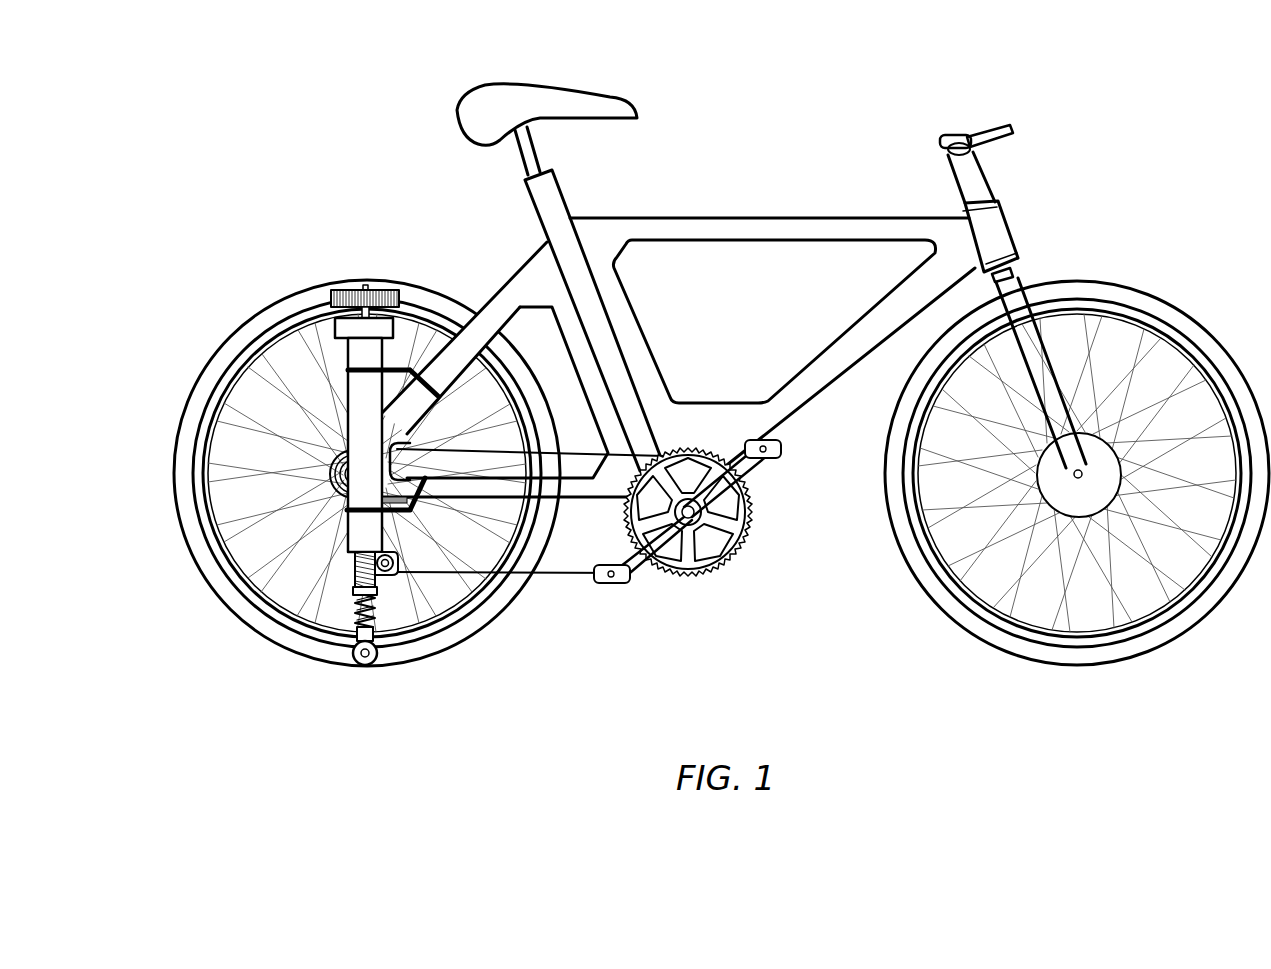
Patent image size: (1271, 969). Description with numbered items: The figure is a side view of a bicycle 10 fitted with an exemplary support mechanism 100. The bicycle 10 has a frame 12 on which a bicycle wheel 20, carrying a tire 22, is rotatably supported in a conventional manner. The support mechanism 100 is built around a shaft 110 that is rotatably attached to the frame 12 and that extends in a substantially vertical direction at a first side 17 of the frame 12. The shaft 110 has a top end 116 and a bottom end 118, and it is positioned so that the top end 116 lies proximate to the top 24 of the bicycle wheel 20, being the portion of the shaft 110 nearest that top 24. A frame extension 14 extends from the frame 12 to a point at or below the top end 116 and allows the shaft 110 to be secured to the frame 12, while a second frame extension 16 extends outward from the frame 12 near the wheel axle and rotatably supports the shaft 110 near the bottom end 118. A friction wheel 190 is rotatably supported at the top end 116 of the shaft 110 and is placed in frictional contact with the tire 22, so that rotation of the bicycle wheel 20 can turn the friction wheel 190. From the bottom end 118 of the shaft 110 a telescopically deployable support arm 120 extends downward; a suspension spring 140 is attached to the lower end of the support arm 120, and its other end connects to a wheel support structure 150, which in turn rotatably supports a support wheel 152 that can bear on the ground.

The bicycle 10 is at (1152, 92).
The frame 12 is at (723, 218).
The frame extension 14 is at (450, 343).
The second frame extension 16 is at (341, 452).
The first side 17 is at (808, 230).
The bicycle wheel 20 is at (470, 645).
The tire 22 is at (428, 657).
The top 24 is at (365, 285).
The support mechanism 100 is at (415, 272).
The shaft 110 is at (350, 403).
The top end 116 is at (340, 306).
The bottom end 118 is at (352, 578).
The support arm 120 is at (378, 535).
The suspension spring 140 is at (354, 615).
The wheel support structure 150 is at (358, 643).
The support wheel 152 is at (368, 667).
The friction wheel 190 is at (342, 288).